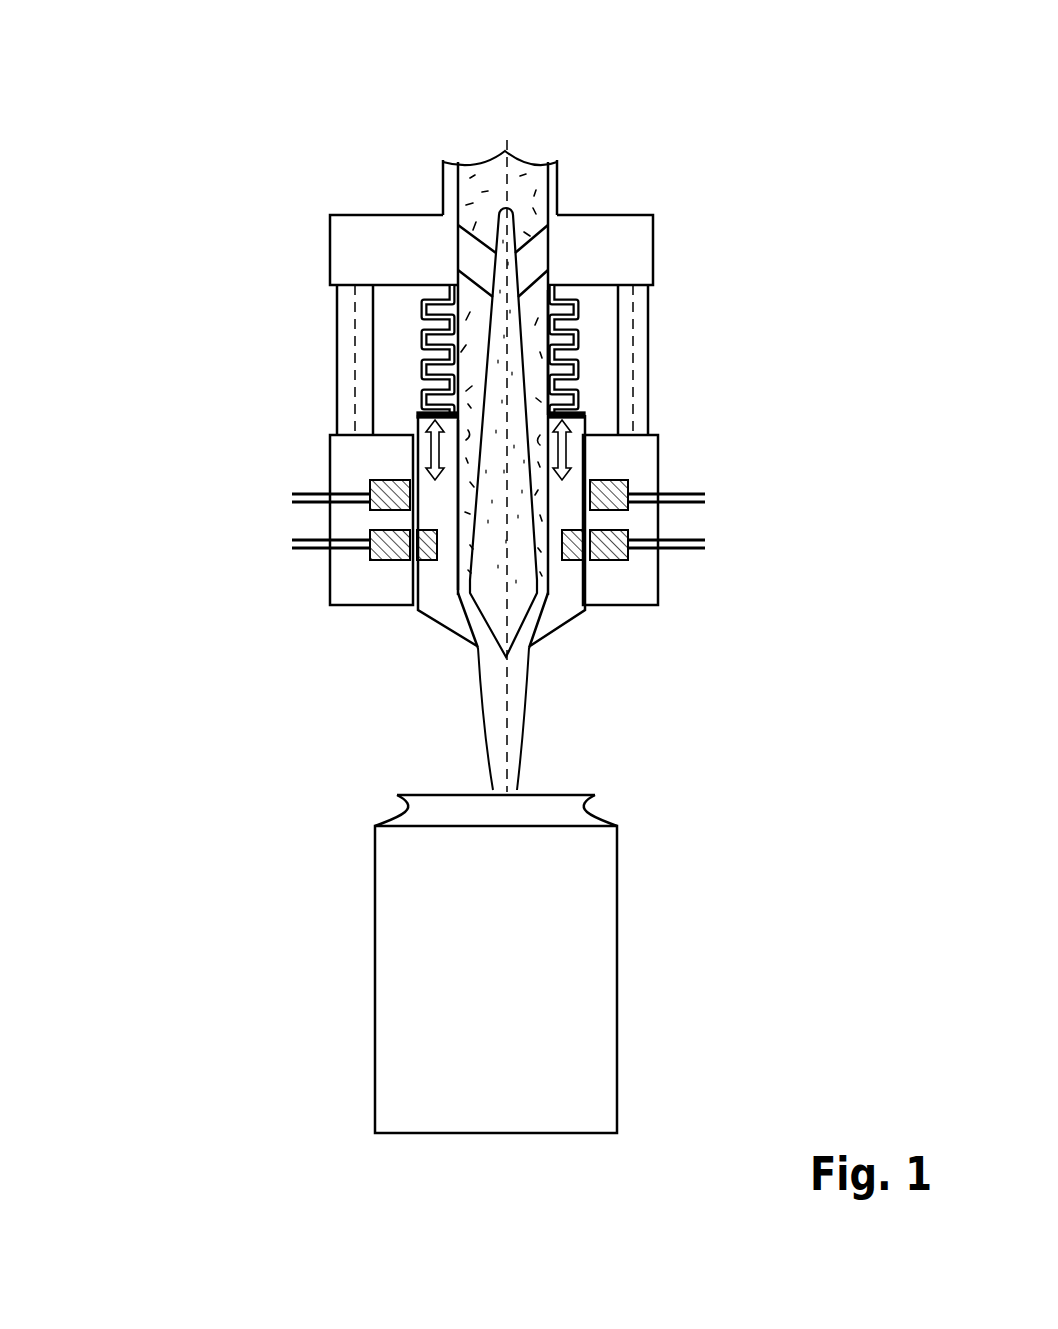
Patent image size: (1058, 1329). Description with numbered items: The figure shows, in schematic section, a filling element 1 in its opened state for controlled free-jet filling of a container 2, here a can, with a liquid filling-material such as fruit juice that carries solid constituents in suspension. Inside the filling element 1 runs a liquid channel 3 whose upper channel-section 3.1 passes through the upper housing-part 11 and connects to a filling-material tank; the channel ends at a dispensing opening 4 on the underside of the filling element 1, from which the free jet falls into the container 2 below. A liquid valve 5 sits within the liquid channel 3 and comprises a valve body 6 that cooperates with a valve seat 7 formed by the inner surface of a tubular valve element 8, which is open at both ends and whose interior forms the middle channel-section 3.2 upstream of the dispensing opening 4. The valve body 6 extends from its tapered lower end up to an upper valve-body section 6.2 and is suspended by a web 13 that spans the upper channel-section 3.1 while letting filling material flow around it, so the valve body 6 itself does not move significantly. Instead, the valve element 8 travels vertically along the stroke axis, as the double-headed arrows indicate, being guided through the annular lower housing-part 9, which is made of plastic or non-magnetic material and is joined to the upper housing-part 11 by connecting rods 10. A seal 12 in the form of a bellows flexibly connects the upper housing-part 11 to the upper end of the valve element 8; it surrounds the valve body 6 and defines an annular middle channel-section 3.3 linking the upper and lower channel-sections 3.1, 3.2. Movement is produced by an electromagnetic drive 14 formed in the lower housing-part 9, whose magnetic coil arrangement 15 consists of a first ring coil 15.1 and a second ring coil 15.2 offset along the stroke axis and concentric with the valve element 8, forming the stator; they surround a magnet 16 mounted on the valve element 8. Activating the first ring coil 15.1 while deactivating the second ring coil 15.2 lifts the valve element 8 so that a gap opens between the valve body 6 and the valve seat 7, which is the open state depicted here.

The filling element 1 is at (213, 140).
The container 2 is at (430, 945).
The liquid channel 3 is at (453, 417).
The upper channel-section 3.1 is at (472, 173).
The middle channel-section 3.2 is at (463, 483).
The annular middle channel-section 3.3 is at (548, 367).
The dispensing opening 4 is at (520, 648).
The liquid valve 5 is at (438, 615).
The valve body 6 is at (500, 387).
The upper valve-body section 6.2 is at (508, 230).
The valve seat 7 is at (465, 630).
The valve element 8 is at (572, 595).
The lower housing-part 9 is at (343, 468).
The connecting rods 10 is at (648, 330).
The upper housing-part 11 is at (625, 235).
The seal 12 is at (577, 330).
The web 13 is at (472, 247).
The electromagnetic drive 14 is at (735, 500).
The magnetic coil arrangement 15 is at (352, 518).
The first ring coil 15.1 is at (590, 483).
The second ring coil 15.2 is at (590, 557).
The magnet 16 is at (430, 557).